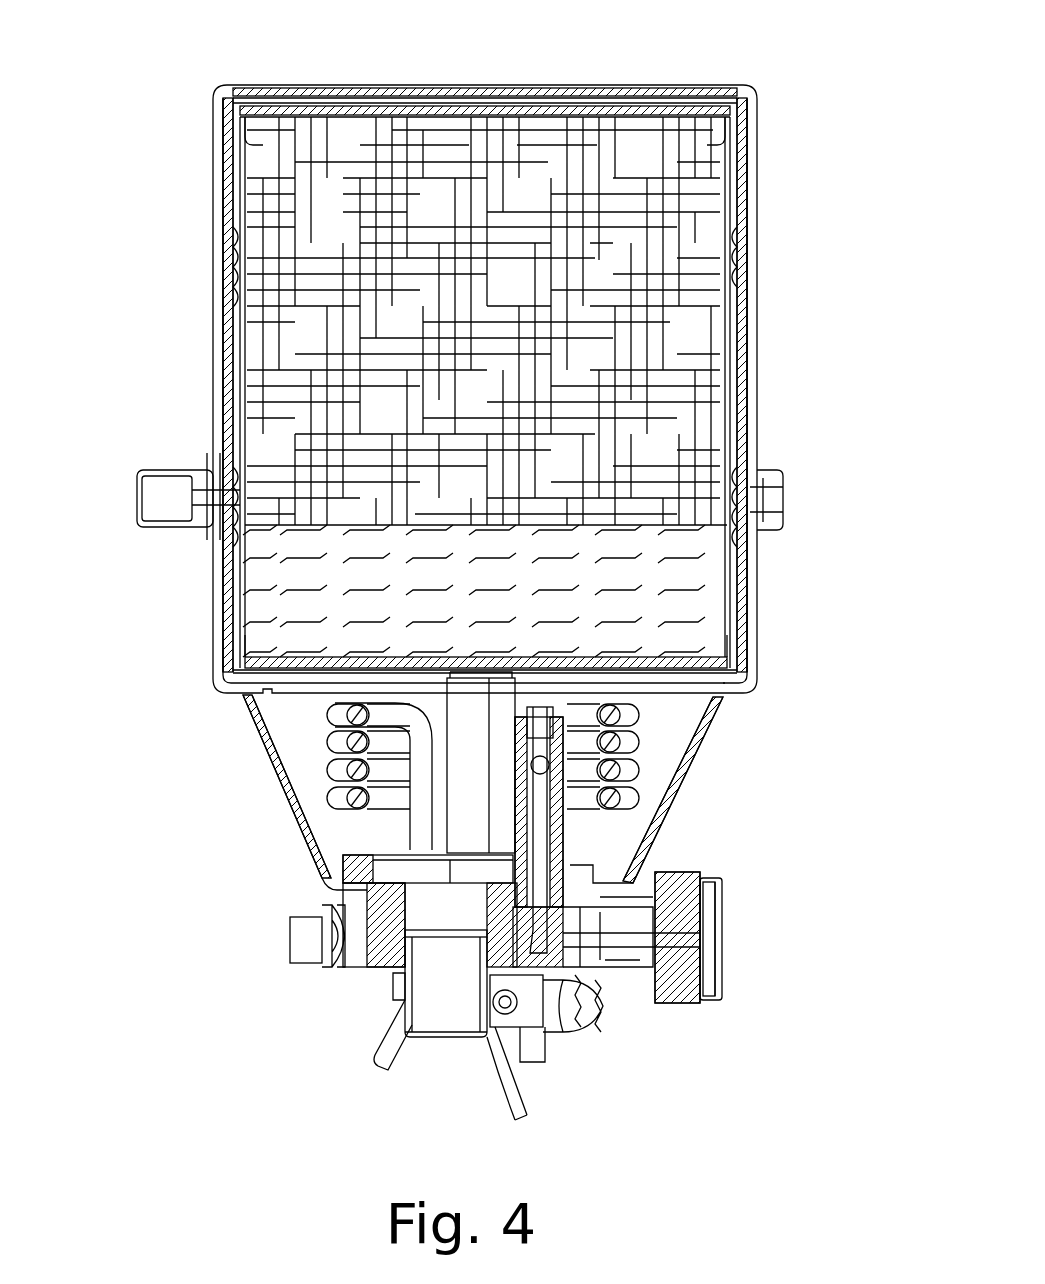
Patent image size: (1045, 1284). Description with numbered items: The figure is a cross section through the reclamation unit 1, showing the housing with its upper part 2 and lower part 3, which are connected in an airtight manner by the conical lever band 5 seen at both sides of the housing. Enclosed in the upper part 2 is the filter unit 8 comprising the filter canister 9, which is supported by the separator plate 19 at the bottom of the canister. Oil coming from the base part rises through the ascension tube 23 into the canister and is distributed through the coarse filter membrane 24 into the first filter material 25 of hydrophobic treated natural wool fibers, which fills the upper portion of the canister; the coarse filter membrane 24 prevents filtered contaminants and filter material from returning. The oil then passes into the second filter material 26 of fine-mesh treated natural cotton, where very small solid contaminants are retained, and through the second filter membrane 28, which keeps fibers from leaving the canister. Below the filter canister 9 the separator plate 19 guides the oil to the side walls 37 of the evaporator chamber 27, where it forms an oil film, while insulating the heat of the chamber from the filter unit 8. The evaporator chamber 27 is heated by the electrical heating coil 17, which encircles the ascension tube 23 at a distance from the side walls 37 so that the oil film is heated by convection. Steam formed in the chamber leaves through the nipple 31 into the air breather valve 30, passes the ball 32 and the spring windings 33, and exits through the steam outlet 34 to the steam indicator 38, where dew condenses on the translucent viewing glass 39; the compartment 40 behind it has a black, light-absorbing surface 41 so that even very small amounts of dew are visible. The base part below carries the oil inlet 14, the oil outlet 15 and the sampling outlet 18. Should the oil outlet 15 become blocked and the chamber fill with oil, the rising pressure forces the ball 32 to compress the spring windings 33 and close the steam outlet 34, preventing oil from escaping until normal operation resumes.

The reclamation unit 1 is at (492, 572).
The upper part 2 is at (748, 263).
The lower part 3 is at (748, 588).
The conical lever band 5 is at (140, 495).
The filter unit 8 is at (740, 207).
The filter canister 9 is at (735, 330).
The oil inlet 14 is at (290, 940).
The oil outlet 15 is at (440, 1030).
The heating coil 17 is at (330, 760).
The sampling outlet 18 is at (513, 1000).
The separator plate 19 is at (757, 693).
The ascension tube 23 is at (470, 838).
The coarse filter membrane 24 is at (590, 107).
The first filter material 25 is at (322, 293).
The second filter material 26 is at (300, 578).
The evaporator chamber 27 is at (290, 725).
The second filter membrane 28 is at (232, 683).
The air breather valve 30 is at (582, 846).
The nipple 31 is at (695, 735).
The ball 32 is at (545, 770).
The spring windings 33 is at (570, 880).
The steam outlet 34 is at (617, 960).
The side walls 37 is at (277, 757).
The steam indicator 38 is at (681, 1010).
The viewing glass 39 is at (722, 932).
The compartment 40 is at (708, 905).
The light-absorbing surface 41 is at (710, 975).